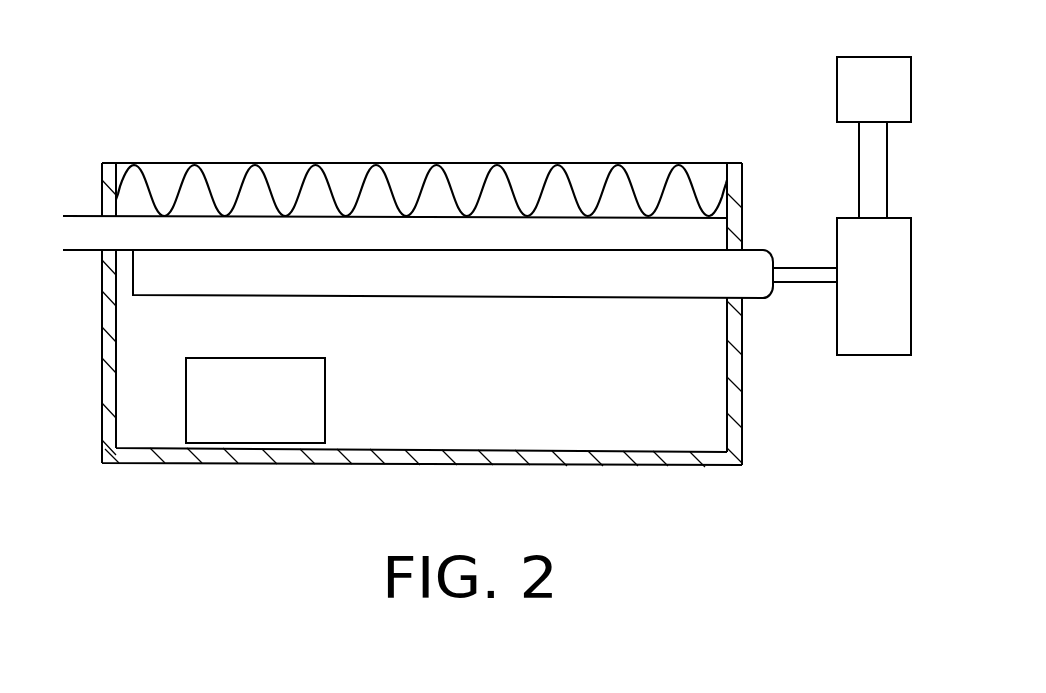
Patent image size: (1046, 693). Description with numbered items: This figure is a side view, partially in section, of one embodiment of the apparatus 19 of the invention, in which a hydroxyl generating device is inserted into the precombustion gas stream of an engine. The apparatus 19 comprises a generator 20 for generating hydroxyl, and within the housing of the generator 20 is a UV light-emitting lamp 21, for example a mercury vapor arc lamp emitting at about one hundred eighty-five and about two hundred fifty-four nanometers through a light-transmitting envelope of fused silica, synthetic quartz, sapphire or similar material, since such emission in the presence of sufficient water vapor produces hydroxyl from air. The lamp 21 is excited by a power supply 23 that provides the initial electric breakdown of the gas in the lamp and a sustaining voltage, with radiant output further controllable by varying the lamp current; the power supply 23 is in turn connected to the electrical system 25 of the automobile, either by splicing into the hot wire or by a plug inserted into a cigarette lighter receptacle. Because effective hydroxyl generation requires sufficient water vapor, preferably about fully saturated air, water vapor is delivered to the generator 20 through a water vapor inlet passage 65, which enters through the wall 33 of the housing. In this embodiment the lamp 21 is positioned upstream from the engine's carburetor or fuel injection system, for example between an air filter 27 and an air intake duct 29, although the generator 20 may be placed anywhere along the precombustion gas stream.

The apparatus 19 is at (61, 481).
The generator 20 is at (598, 418).
The UV light-emitting lamp 21 is at (499, 288).
The power supply 23 is at (888, 323).
The electrical system 25 is at (888, 102).
The air filter 27 is at (587, 182).
The air intake duct 29 is at (272, 417).
The insulated wall 33 is at (110, 343).
The water vapor inlet passage 65 is at (68, 236).